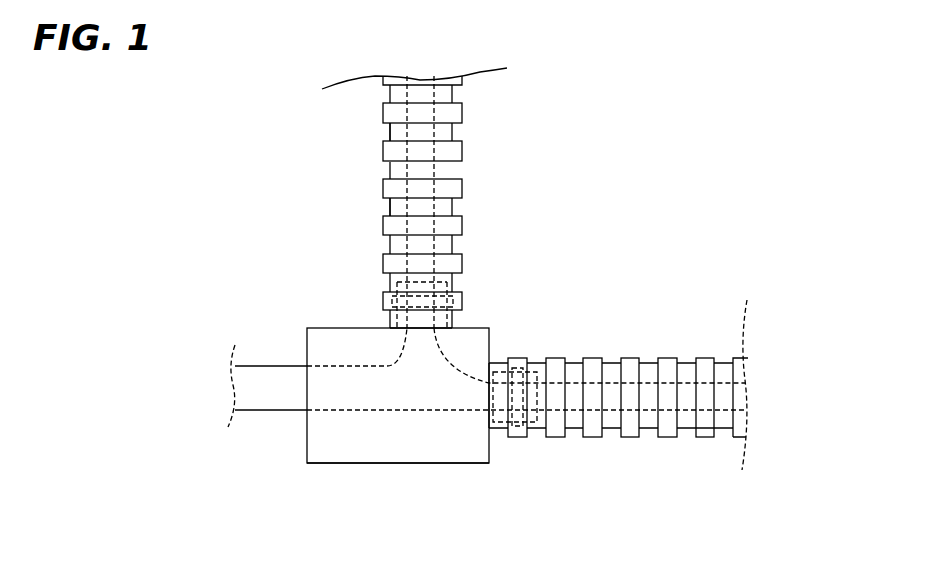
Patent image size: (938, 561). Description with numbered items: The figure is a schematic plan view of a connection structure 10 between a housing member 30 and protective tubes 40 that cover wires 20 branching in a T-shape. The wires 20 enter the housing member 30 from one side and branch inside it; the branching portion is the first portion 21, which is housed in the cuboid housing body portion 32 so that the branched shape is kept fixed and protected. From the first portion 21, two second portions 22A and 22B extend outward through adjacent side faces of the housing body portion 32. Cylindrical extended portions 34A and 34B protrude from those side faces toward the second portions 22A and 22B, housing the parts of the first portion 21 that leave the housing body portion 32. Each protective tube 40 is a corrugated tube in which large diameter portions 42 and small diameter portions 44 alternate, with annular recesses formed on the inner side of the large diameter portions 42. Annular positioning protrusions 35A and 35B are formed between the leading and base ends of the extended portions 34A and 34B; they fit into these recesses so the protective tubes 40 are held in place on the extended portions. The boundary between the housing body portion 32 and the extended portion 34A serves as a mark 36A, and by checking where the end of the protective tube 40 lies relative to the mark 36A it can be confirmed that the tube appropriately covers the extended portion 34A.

The connection structure 10 is at (269, 292).
The wires 20 is at (266, 418).
The first portion 21 is at (443, 410).
The second portion 22A is at (572, 432).
The second portion 22B is at (438, 139).
The housing member 30 is at (343, 470).
The housing body portion 32 is at (398, 464).
The extended portion 34A is at (538, 362).
The extended portion 34B is at (395, 282).
The positioning protrusion 35A is at (520, 436).
The positioning protrusion 35B is at (460, 297).
The mark 36A is at (442, 329).
The protective tube 40 is at (462, 188).
The large diameter portion 42 is at (462, 262).
The small diameter portion 44 is at (390, 205).